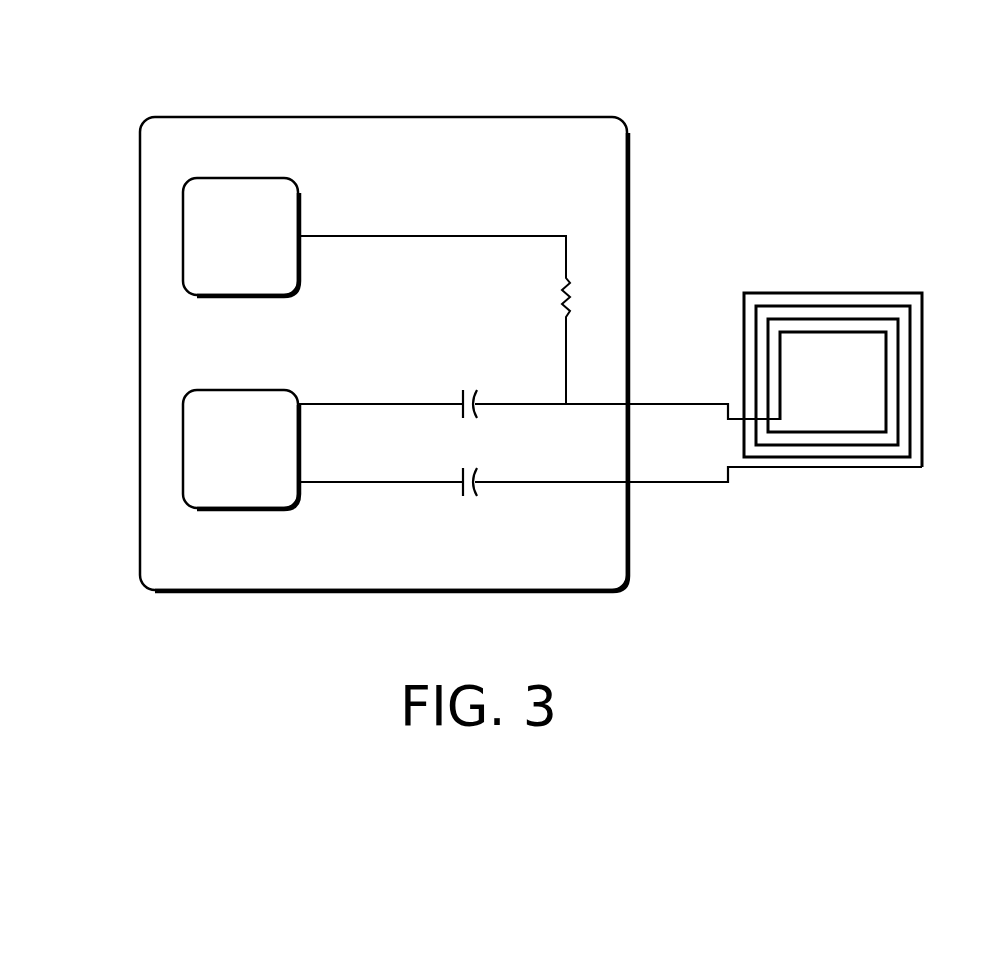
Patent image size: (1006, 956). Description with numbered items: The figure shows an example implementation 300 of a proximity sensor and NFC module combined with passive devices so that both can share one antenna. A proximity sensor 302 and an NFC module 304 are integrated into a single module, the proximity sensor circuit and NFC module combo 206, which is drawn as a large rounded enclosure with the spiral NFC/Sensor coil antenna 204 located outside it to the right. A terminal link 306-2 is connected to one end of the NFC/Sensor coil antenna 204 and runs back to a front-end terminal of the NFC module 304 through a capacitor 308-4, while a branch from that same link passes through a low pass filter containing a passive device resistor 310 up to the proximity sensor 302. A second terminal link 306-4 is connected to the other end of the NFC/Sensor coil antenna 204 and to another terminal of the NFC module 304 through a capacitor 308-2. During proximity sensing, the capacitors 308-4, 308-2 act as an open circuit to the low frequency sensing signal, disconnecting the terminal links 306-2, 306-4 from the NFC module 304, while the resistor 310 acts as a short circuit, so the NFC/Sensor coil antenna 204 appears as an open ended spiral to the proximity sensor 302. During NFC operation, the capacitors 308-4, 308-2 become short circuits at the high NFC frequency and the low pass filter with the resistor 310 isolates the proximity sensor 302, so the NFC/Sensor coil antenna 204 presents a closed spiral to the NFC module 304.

The example implementation 300 is at (491, 77).
The proximity sensor circuit and NFC module combo 206 is at (628, 133).
The proximity sensor 302 is at (241, 237).
The NFC module 304 is at (241, 449).
The passive device resistor 310 is at (434, 320).
The capacitor 308-4 is at (473, 378).
The capacitor 308-2 is at (473, 508).
The terminal link 306-2 is at (645, 403).
The second terminal link 306-4 is at (645, 482).
The NFC/Sensor coil antenna 204 is at (922, 293).